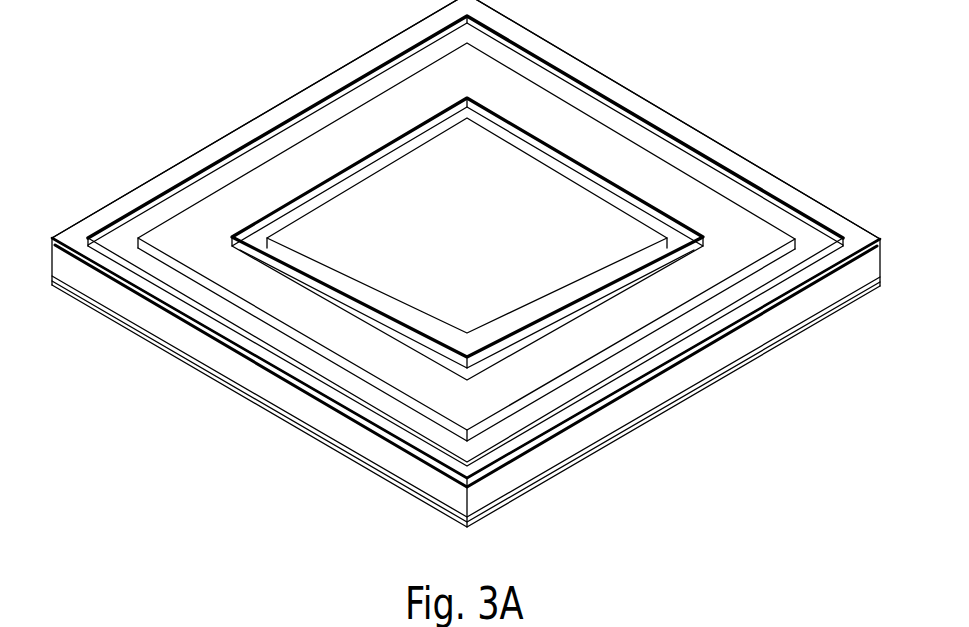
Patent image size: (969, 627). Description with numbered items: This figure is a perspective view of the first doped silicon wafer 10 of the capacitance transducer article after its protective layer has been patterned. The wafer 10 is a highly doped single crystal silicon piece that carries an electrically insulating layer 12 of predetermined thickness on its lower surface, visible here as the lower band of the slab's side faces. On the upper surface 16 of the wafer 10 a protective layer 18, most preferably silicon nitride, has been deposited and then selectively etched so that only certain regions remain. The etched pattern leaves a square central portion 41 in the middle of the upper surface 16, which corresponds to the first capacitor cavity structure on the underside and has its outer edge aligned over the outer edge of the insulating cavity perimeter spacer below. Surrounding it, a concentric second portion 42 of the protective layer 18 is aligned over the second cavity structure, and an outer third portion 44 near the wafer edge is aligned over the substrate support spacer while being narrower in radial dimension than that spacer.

The first doped silicon wafer 10 is at (667, 385).
The electrically insulating layer 12 is at (612, 438).
The upper surface 16 is at (682, 160).
The protective layer 18 is at (612, 90).
The central portion 41 is at (527, 168).
The second portion 42 is at (755, 235).
The third portion 44 is at (847, 230).